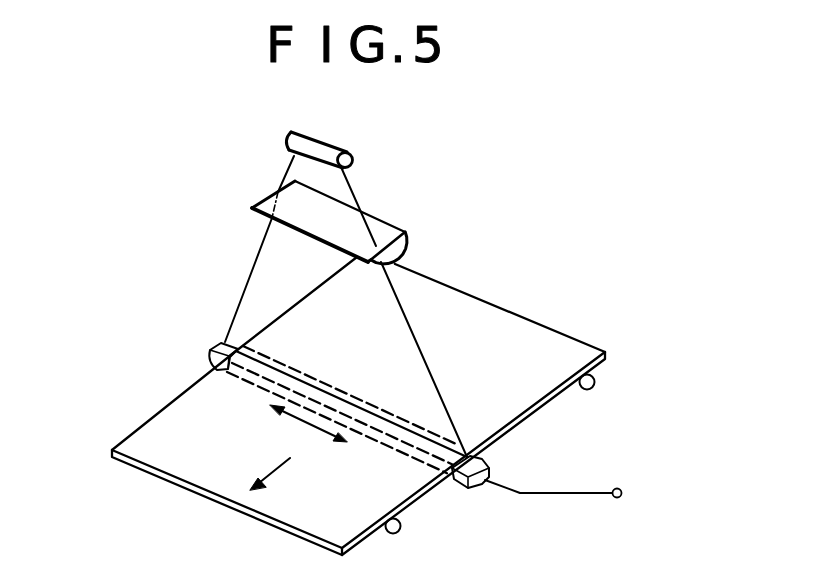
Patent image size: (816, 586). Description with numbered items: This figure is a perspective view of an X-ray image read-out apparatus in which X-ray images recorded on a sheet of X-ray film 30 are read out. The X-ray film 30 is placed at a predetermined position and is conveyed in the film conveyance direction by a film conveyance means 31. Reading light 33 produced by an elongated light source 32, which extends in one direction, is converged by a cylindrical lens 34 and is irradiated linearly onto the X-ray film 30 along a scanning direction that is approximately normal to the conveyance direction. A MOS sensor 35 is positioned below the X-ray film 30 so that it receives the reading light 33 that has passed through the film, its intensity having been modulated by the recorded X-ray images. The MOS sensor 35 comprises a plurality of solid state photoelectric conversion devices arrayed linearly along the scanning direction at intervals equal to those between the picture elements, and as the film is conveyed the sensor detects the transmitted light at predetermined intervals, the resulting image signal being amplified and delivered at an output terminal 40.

The X-ray film 30 is at (573, 339).
The film conveyance means 31 is at (594, 386).
The elongated light source 32 is at (343, 153).
The reading light 33 is at (349, 190).
The cylindrical lens 34 is at (403, 230).
The MOS sensor 35 is at (489, 466).
The output terminal 40 is at (619, 498).